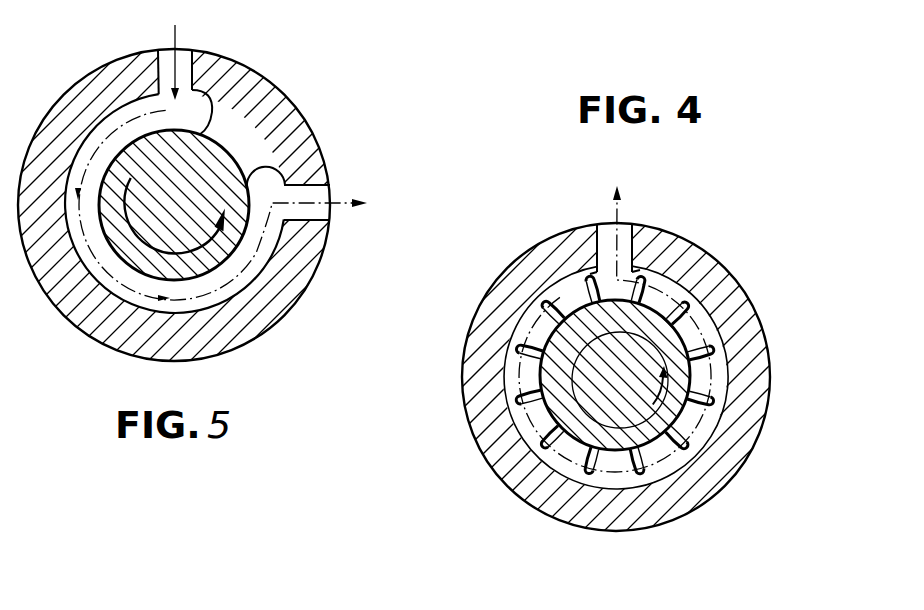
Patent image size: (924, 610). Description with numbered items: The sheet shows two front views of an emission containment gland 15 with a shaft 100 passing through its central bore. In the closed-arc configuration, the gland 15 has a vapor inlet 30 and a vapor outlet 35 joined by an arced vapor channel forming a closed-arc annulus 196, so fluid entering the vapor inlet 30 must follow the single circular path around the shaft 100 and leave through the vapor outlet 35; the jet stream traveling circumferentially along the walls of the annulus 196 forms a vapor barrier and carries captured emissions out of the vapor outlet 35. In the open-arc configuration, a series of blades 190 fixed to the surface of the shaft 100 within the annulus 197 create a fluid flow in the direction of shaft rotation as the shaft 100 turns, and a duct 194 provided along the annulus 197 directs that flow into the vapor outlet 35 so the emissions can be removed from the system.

In FIG. 5, the emission containment gland 15 is at (282, 78).
In FIG. 4, the emission containment gland 15 is at (708, 238).
In FIG. 5, the vapor inlet 30 is at (170, 60).
In FIG. 5, the vapor outlet 35 is at (326, 191).
In FIG. 4, the vapor outlet 35 is at (630, 228).
In FIG. 5, the shaft 100 is at (233, 258).
In FIG. 4, the shaft 100 is at (690, 428).
In FIG. 5, the closed-arc annulus 196 is at (140, 305).
In FIG. 4, the duct 194 is at (602, 267).
In FIG. 4, the blades 190 is at (546, 304).
In FIG. 4, the open-arc annulus 197 is at (563, 481).